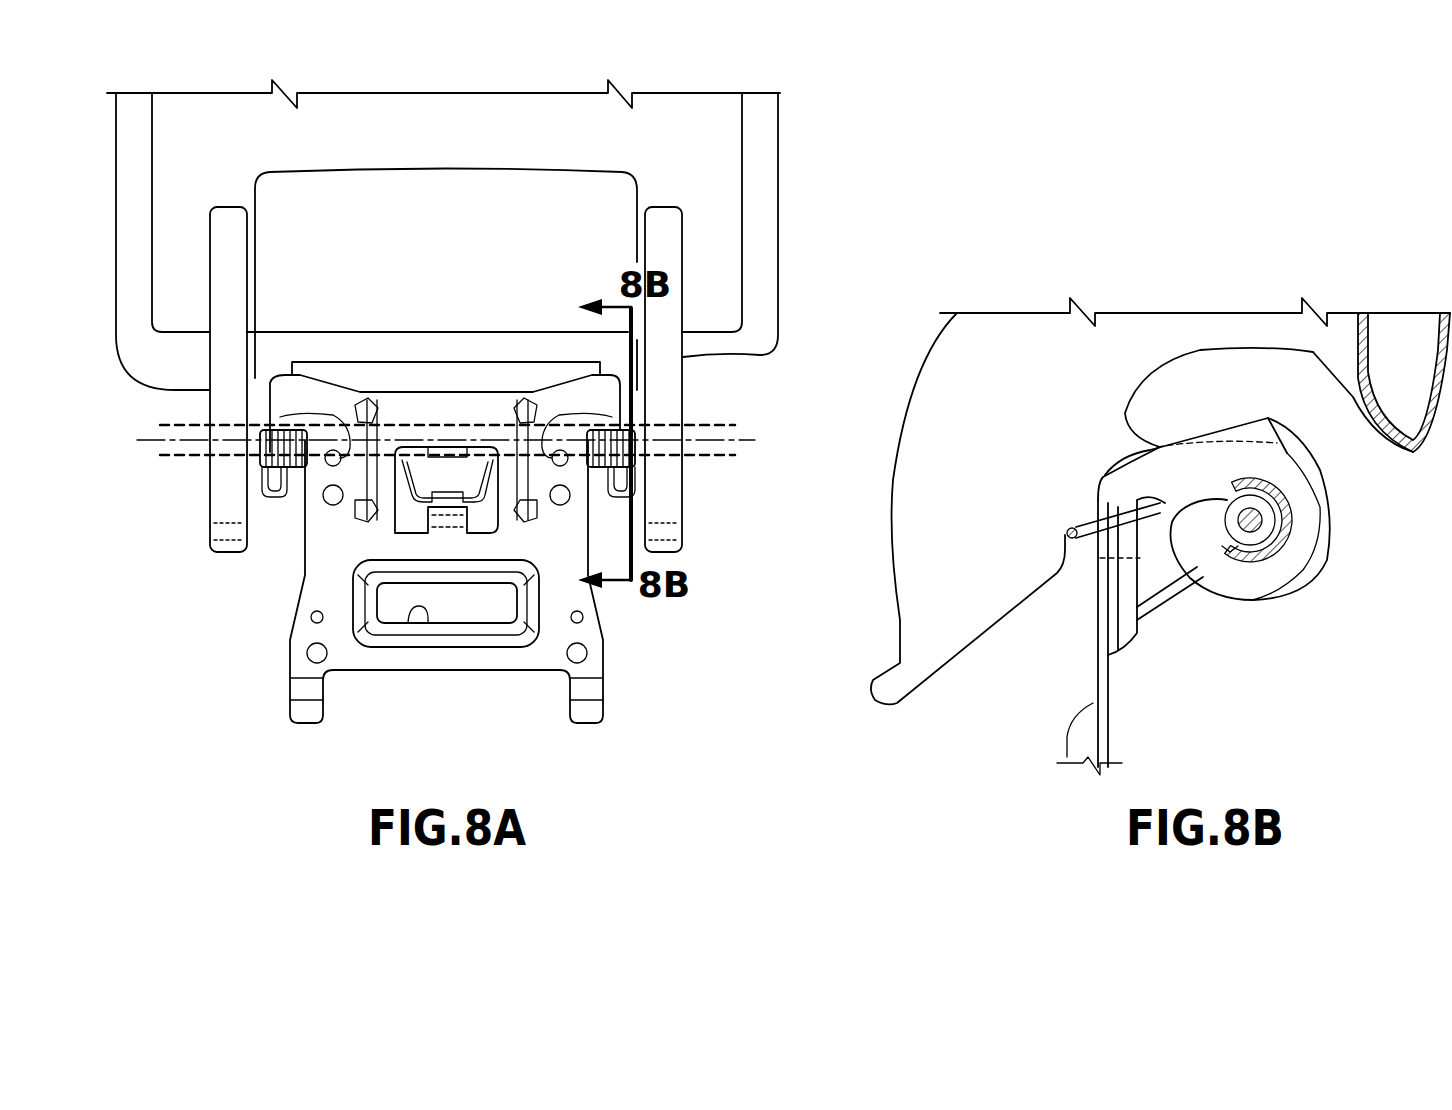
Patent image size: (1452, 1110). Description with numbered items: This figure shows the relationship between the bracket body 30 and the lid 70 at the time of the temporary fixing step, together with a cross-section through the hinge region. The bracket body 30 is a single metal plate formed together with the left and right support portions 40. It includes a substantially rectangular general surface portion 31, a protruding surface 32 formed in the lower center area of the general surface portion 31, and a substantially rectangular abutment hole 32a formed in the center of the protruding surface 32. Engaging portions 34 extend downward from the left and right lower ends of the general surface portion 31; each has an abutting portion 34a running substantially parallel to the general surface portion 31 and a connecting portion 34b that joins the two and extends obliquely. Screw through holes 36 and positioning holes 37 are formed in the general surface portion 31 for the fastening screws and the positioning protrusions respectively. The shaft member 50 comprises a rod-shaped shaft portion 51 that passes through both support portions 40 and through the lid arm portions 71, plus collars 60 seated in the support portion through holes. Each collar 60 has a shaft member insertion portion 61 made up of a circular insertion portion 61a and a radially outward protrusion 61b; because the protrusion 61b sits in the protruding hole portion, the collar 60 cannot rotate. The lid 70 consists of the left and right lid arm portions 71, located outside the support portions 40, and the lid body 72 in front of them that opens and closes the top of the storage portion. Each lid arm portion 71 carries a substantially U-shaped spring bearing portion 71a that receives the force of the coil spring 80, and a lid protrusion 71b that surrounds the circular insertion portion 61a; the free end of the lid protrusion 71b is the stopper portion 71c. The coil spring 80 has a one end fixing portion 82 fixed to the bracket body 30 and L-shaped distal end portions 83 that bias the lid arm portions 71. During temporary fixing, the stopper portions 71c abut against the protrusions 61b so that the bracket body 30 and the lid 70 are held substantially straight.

In FIG. 8A, the bracket body 30 is at (296, 589).
In FIG. 8B, the bracket body 30 is at (1088, 675).
In FIG. 8A, the general surface portion 31 is at (448, 662).
In FIG. 8A, the protruding surface 32 is at (492, 630).
In FIG. 8A, the abutment hole 32a is at (408, 620).
In FIG. 8A, the engaging portion 34 is at (197, 703).
In FIG. 8A, the abutting portion 34a is at (290, 714).
In FIG. 8A, the connecting portion 34b is at (290, 690).
In FIG. 8A, the screw through hole 36 is at (322, 492).
In FIG. 8A, the positioning hole 37 is at (624, 618).
In FIG. 8B, the support portion 40 is at (1295, 475).
In FIG. 8A, the shaft member 50 is at (470, 270).
In FIG. 8B, the shaft member 50 is at (1232, 469).
In FIG. 8A, the shaft portion 51 is at (448, 416).
In FIG. 8B, the shaft portion 51 is at (1222, 497).
In FIG. 8A, the collar 60 is at (399, 416).
In FIG. 8B, the collar 60 is at (1182, 611).
In FIG. 8B, the shaft member insertion portion 61 is at (1182, 611).
In FIG. 8B, the circular insertion portion 61a is at (1213, 547).
In FIG. 8B, the protrusion 61b is at (1235, 543).
In FIG. 8A, the lid 70 is at (847, 160).
In FIG. 8B, the lid 70 is at (1180, 240).
In FIG. 8A, the lid arm portion 71 is at (757, 362).
In FIG. 8B, the lid arm portion 71 is at (1207, 330).
In FIG. 8B, the spring bearing portion 71a is at (1068, 547).
In FIG. 8B, the lid protrusion 71b is at (1313, 563).
In FIG. 8B, the stopper portion 71c is at (1227, 548).
In FIG. 8A, the lid body 72 is at (782, 168).
In FIG. 8B, the lid body 72 is at (1352, 330).
In FIG. 8A, the coil spring 80 is at (462, 472).
In FIG. 8B, the coil spring 80 is at (1071, 495).
In FIG. 8A, the one end fixing portion 82 is at (403, 490).
In FIG. 8A, the distal end portion 83 is at (258, 473).
In FIG. 8B, the distal end portion 83 is at (1088, 527).